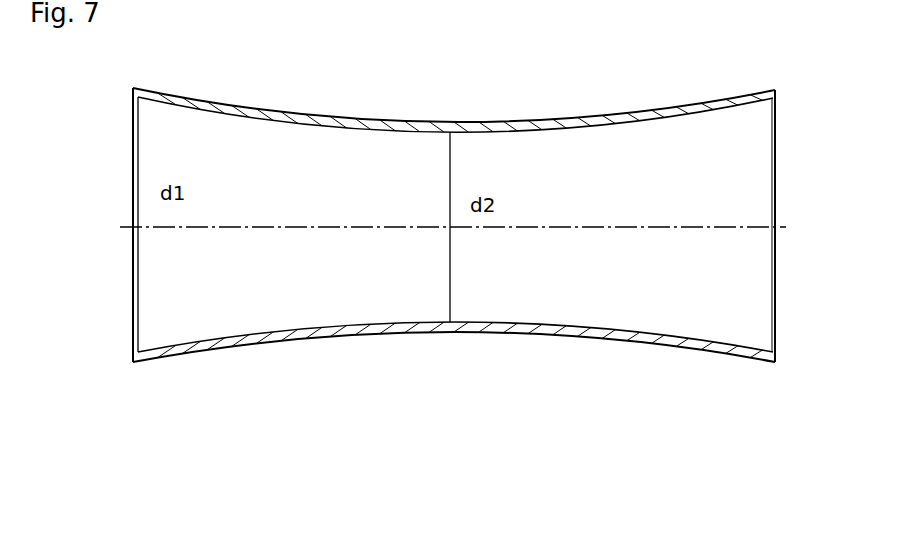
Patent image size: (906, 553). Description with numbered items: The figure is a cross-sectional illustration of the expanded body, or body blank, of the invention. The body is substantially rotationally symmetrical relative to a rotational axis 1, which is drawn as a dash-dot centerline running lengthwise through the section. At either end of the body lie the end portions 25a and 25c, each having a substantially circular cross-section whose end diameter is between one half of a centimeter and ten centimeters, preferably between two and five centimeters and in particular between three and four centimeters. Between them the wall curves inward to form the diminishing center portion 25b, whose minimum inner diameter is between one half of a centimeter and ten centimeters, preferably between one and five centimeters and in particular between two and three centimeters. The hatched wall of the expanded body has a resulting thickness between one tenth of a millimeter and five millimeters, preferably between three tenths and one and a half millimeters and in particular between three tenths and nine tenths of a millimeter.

The rotational axis 1 is at (323, 192).
The end portion 25a is at (162, 355).
The diminishing center portion 25b is at (450, 332).
The end portion 25c is at (747, 358).